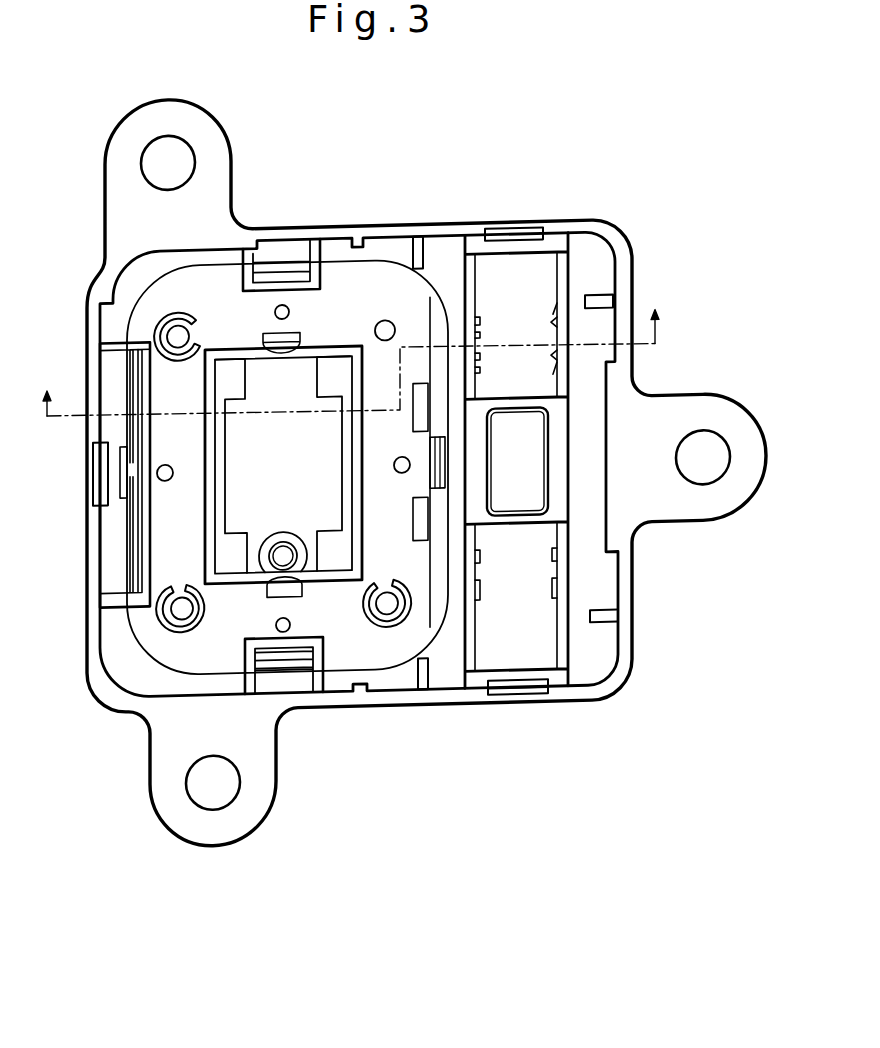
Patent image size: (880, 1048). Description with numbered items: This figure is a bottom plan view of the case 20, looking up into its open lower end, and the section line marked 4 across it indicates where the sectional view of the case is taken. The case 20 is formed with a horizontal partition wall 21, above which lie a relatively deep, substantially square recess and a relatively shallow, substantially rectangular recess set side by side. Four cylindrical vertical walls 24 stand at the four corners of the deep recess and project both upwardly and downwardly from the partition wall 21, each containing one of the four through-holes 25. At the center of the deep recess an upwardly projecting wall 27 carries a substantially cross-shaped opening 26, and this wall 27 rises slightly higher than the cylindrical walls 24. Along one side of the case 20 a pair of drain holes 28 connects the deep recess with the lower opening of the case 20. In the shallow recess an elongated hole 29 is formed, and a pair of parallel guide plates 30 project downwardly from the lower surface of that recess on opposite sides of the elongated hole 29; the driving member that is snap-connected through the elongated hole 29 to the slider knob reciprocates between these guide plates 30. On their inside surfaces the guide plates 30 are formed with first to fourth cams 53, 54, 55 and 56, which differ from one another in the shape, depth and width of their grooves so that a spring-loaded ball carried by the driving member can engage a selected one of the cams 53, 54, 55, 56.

The case 20 is at (558, 226).
The partition wall 21 is at (388, 667).
The cylindrical vertical walls 24 is at (176, 582).
The through-holes 25 is at (181, 327).
The cross-shaped opening 26 is at (232, 508).
The upwardly projecting wall 27 is at (342, 580).
The drain holes 28 is at (103, 513).
The elongated hole 29 is at (540, 481).
The guide plates 30 is at (466, 264).
The first cam 53 is at (557, 319).
The second cam 54 is at (561, 581).
The third cam 55 is at (478, 578).
The fourth cam 56 is at (474, 328).
The section line 4- 4 is at (354, 351).